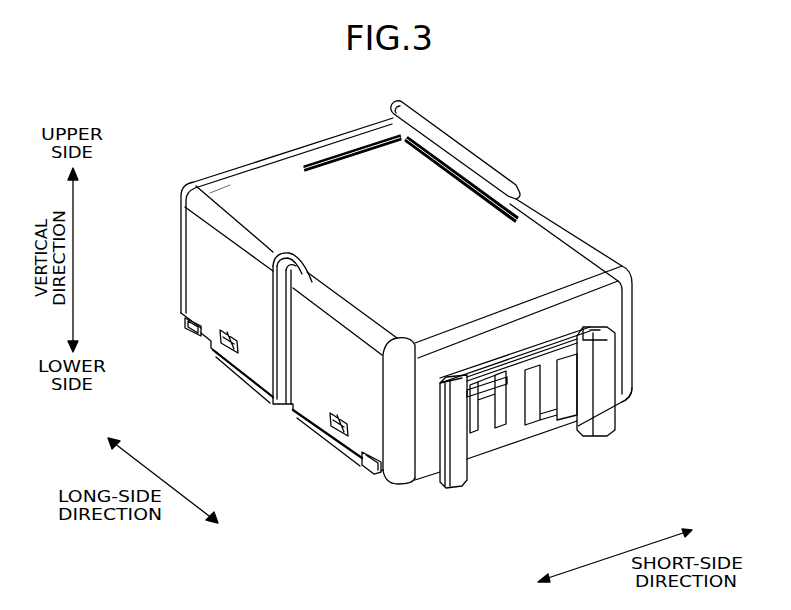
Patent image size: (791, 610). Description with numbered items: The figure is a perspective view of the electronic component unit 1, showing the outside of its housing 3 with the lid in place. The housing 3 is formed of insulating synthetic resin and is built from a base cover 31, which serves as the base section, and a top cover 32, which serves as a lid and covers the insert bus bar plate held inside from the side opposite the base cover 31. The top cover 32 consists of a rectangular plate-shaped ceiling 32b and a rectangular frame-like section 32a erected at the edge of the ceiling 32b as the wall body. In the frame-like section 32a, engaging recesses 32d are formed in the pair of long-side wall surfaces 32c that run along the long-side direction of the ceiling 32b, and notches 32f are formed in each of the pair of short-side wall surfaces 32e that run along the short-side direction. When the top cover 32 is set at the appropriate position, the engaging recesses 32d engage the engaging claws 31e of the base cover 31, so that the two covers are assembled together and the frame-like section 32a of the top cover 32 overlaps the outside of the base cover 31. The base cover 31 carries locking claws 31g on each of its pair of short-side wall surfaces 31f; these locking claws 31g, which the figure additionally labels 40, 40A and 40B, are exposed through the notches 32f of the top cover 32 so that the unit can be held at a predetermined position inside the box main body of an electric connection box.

The electronic component unit 1 is at (148, 132).
The housing 3 is at (705, 353).
The base cover 31 is at (570, 440).
The engaging claws 31e is at (207, 356).
The short-side wall surfaces 31f is at (553, 360).
The locking claws 31g is at (483, 433).
The top cover 32 is at (640, 340).
The rectangular frame-like section 32a is at (160, 232).
The ceiling 32b is at (282, 185).
The long-side wall surfaces 32c is at (462, 140).
The engaging recesses 32d is at (224, 330).
The short-side wall surfaces 32e is at (327, 137).
The notches 32f is at (517, 367).
The lock mechanism 40 is at (522, 393).
The first lock portion 40A is at (487, 402).
The second lock portion 40B is at (551, 389).